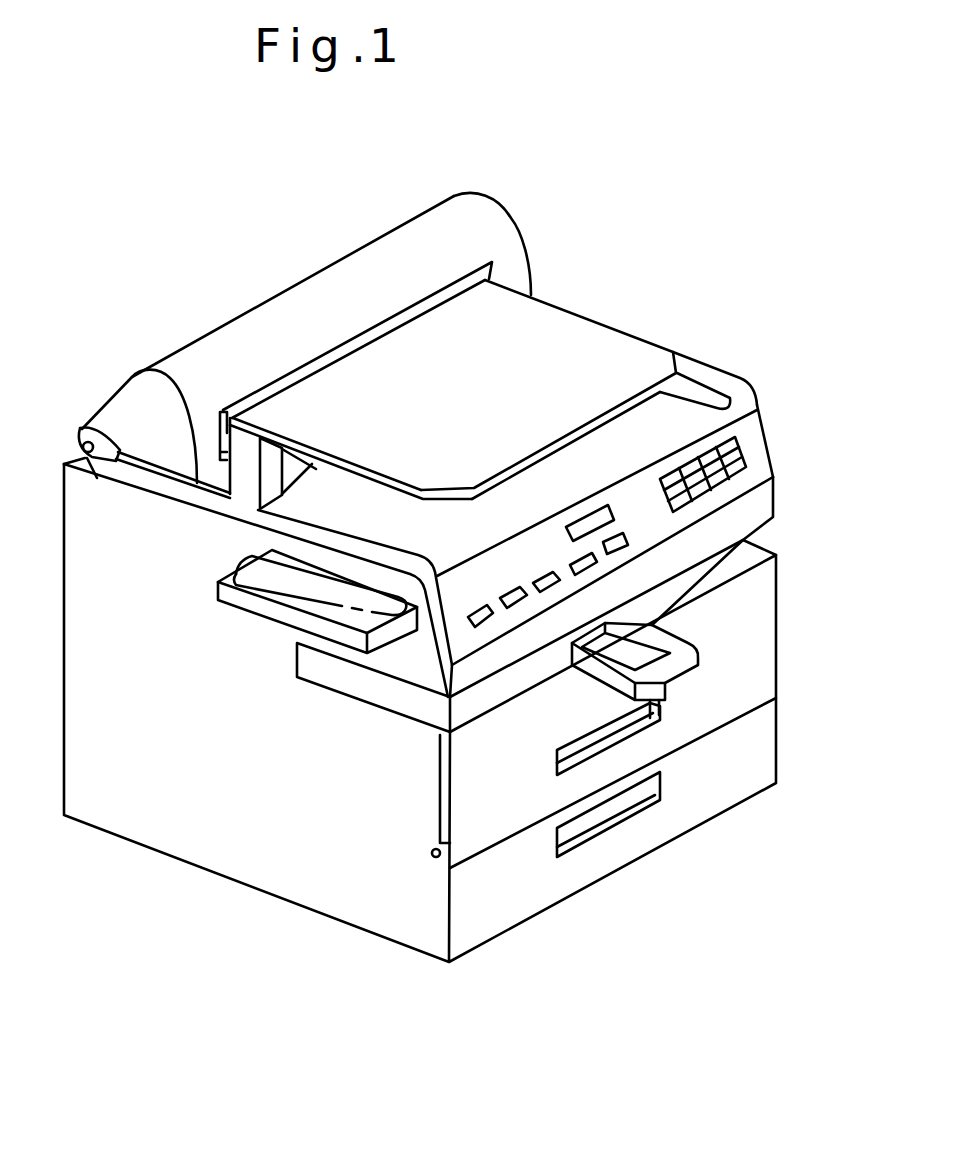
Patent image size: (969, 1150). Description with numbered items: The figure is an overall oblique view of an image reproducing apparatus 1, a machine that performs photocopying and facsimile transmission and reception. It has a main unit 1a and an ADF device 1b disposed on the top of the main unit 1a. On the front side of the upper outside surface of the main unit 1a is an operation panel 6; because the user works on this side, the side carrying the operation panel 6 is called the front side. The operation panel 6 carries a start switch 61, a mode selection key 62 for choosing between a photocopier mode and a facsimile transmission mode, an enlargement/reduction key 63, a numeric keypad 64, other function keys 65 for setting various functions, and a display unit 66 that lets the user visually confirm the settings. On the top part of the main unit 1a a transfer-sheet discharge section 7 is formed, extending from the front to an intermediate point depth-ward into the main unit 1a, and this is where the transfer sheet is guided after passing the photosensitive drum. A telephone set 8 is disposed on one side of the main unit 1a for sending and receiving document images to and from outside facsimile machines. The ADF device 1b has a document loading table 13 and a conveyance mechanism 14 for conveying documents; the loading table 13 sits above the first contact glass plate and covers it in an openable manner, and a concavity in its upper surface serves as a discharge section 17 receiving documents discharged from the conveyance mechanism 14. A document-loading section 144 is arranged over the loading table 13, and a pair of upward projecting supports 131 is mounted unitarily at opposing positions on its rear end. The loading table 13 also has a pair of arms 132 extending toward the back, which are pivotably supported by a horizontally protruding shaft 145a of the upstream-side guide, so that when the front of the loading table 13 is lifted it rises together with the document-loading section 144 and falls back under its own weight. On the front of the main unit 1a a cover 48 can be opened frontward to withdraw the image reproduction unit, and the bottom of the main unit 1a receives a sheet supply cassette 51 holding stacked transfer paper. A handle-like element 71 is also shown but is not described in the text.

The image reproducing apparatus 1 is at (683, 185).
The main unit 1a is at (785, 522).
The ADF device 1b is at (738, 364).
The operation panel 6 is at (748, 449).
The transfer-sheet discharge section 7 is at (416, 703).
The telephone set 8 is at (272, 582).
The document loading table 13 is at (288, 511).
The upward projecting supports 131 is at (270, 466).
The arms 132 is at (143, 478).
The conveyance mechanism 14 is at (484, 198).
The document-loading section 144 is at (572, 340).
The shaft 145a is at (82, 430).
The discharge section 17 is at (692, 390).
The cover 48 is at (750, 663).
The sheet supply cassette 51 is at (512, 893).
The start switch 61 is at (475, 615).
The mode selection key 62 is at (508, 596).
The enlargement/reduction key 63 is at (546, 572).
The numeric keypad 64 is at (684, 473).
The function keys 65 is at (592, 568).
The display unit 66 is at (590, 520).
The handle 71 is at (682, 650).